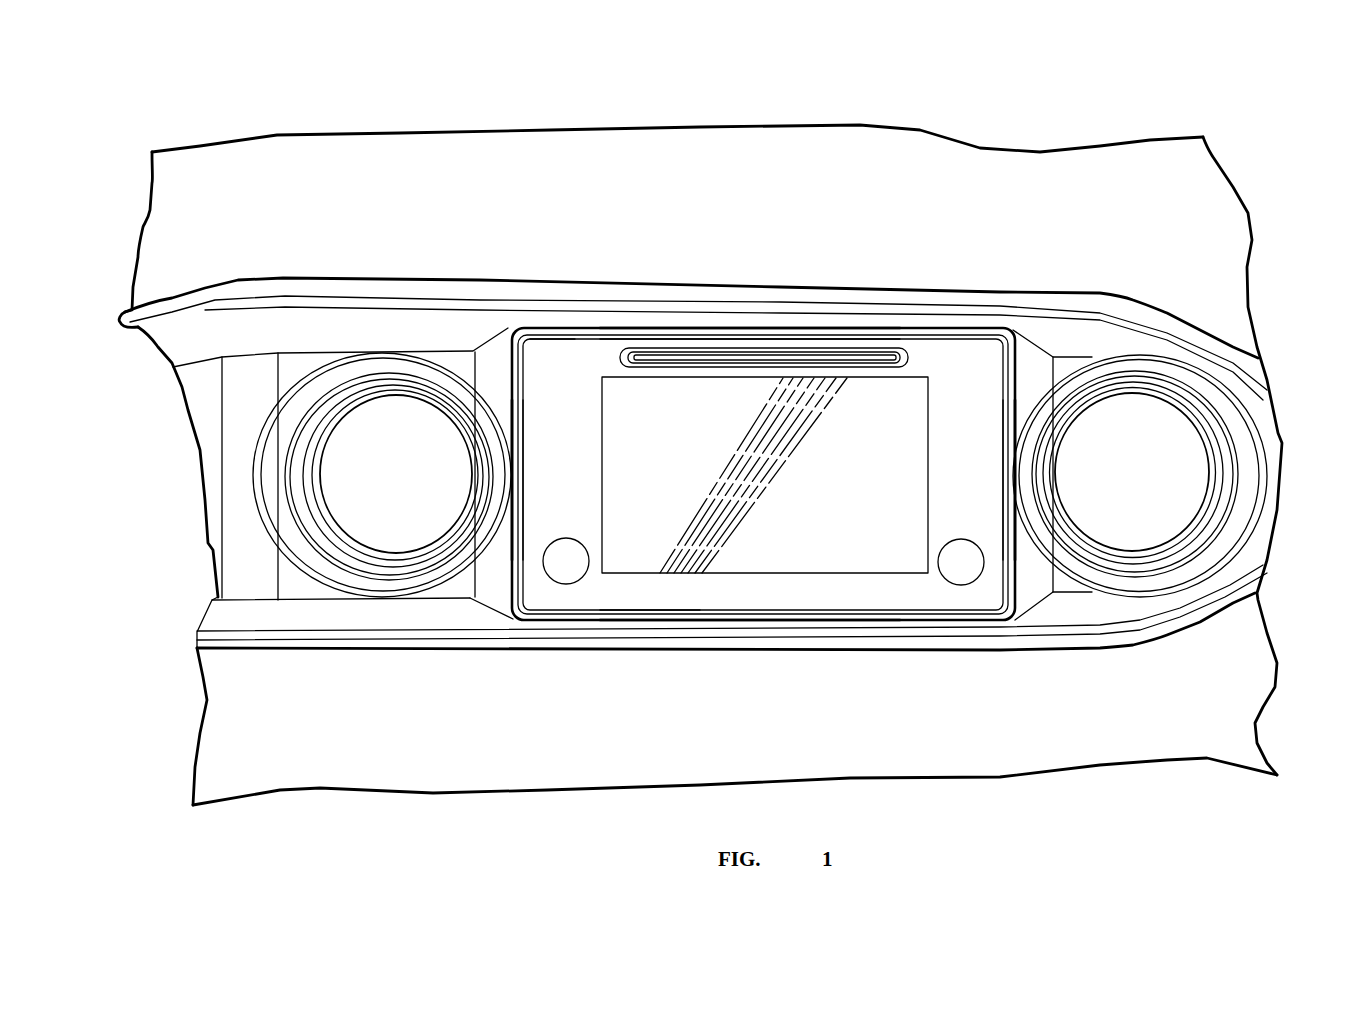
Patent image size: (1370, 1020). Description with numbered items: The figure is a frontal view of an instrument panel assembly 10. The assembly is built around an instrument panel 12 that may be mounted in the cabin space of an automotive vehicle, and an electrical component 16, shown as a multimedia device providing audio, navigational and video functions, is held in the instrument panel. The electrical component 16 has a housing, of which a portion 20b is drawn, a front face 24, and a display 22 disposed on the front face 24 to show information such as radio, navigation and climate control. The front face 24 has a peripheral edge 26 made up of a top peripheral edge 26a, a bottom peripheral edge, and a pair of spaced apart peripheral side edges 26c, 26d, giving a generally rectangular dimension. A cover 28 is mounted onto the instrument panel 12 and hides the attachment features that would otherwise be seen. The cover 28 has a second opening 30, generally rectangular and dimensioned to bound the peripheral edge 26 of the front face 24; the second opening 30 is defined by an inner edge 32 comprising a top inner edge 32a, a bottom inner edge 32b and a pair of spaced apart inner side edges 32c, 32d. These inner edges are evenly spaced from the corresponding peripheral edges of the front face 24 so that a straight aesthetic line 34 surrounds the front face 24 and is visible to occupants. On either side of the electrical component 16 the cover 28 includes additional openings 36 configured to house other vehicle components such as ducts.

The instrument panel assembly 10 is at (948, 112).
The instrument panel 12 is at (693, 305).
The electrical component 16 is at (752, 420).
The lower edge of bezel 20b is at (630, 612).
The display 22 is at (765, 475).
The front face 24 is at (943, 352).
The peripheral edge 26 is at (764, 475).
The top peripheral edge 26a is at (588, 339).
The peripheral side edge 26c is at (522, 483).
The peripheral side edge 26d is at (1007, 452).
The cover 28 is at (1010, 266).
The second opening 30 is at (522, 627).
The inner edge 32 is at (740, 480).
The top inner edge 32a is at (667, 335).
The bottom inner edge 32b is at (650, 620).
The inner side edge 32c is at (517, 530).
The inner side edge 32d is at (1013, 389).
The aesthetic line 34 is at (550, 339).
The additional openings 36 is at (322, 368).